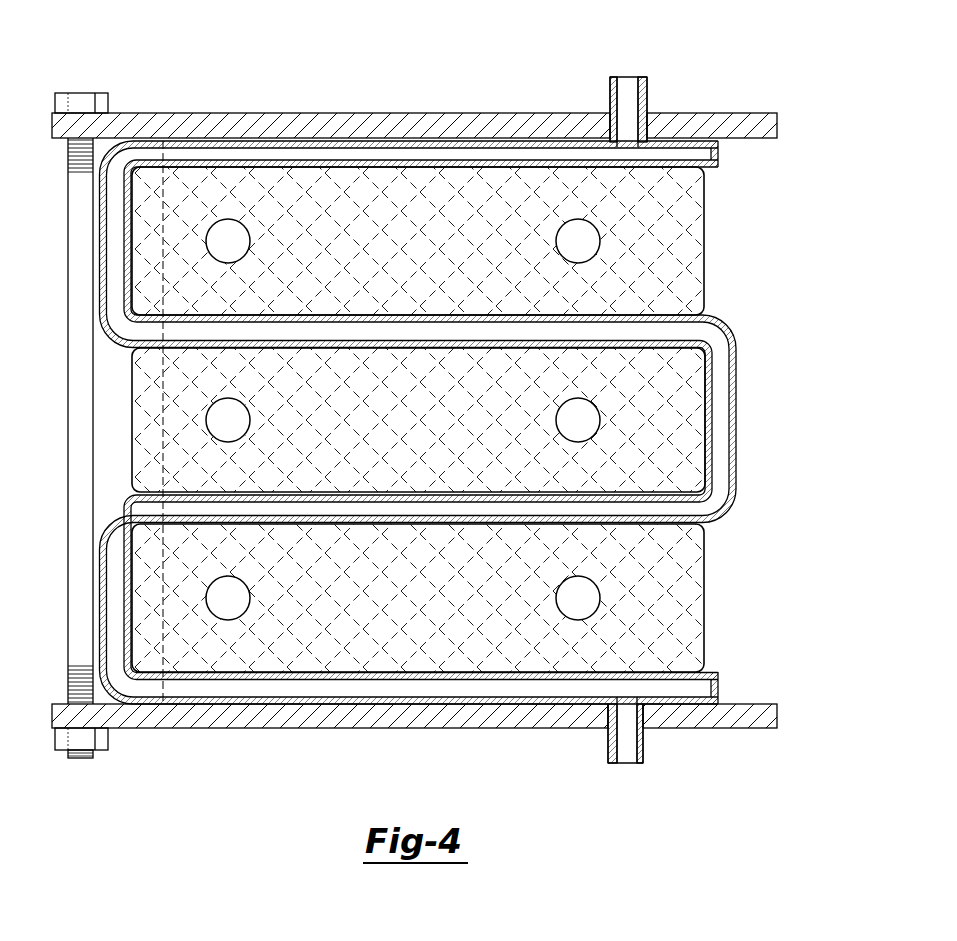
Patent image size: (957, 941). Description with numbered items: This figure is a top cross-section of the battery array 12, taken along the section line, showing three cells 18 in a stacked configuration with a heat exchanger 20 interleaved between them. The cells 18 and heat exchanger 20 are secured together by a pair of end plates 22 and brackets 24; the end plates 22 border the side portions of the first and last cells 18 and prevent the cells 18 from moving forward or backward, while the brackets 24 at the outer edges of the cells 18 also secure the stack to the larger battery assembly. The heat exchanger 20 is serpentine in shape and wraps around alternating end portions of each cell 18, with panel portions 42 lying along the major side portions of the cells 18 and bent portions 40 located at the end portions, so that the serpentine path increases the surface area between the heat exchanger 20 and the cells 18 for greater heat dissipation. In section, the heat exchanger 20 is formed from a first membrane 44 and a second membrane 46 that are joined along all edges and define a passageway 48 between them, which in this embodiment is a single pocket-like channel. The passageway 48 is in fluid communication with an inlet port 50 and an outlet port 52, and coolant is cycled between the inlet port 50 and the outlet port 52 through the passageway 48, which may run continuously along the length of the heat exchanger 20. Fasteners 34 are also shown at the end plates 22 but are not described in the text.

The battery array 12 is at (471, 85).
The cells 18 is at (704, 240).
The heat exchanger 20 is at (737, 496).
The end plates 22 is at (728, 113).
The brackets 24 is at (106, 388).
The tie bolt 34 is at (86, 95).
The bent portions 40 is at (106, 280).
The panel portions 42 is at (318, 140).
The first membrane 44 is at (737, 387).
The second membrane 46 is at (710, 430).
The passageway 48 is at (718, 345).
The inlet port 50 is at (627, 762).
The outlet port 52 is at (630, 80).